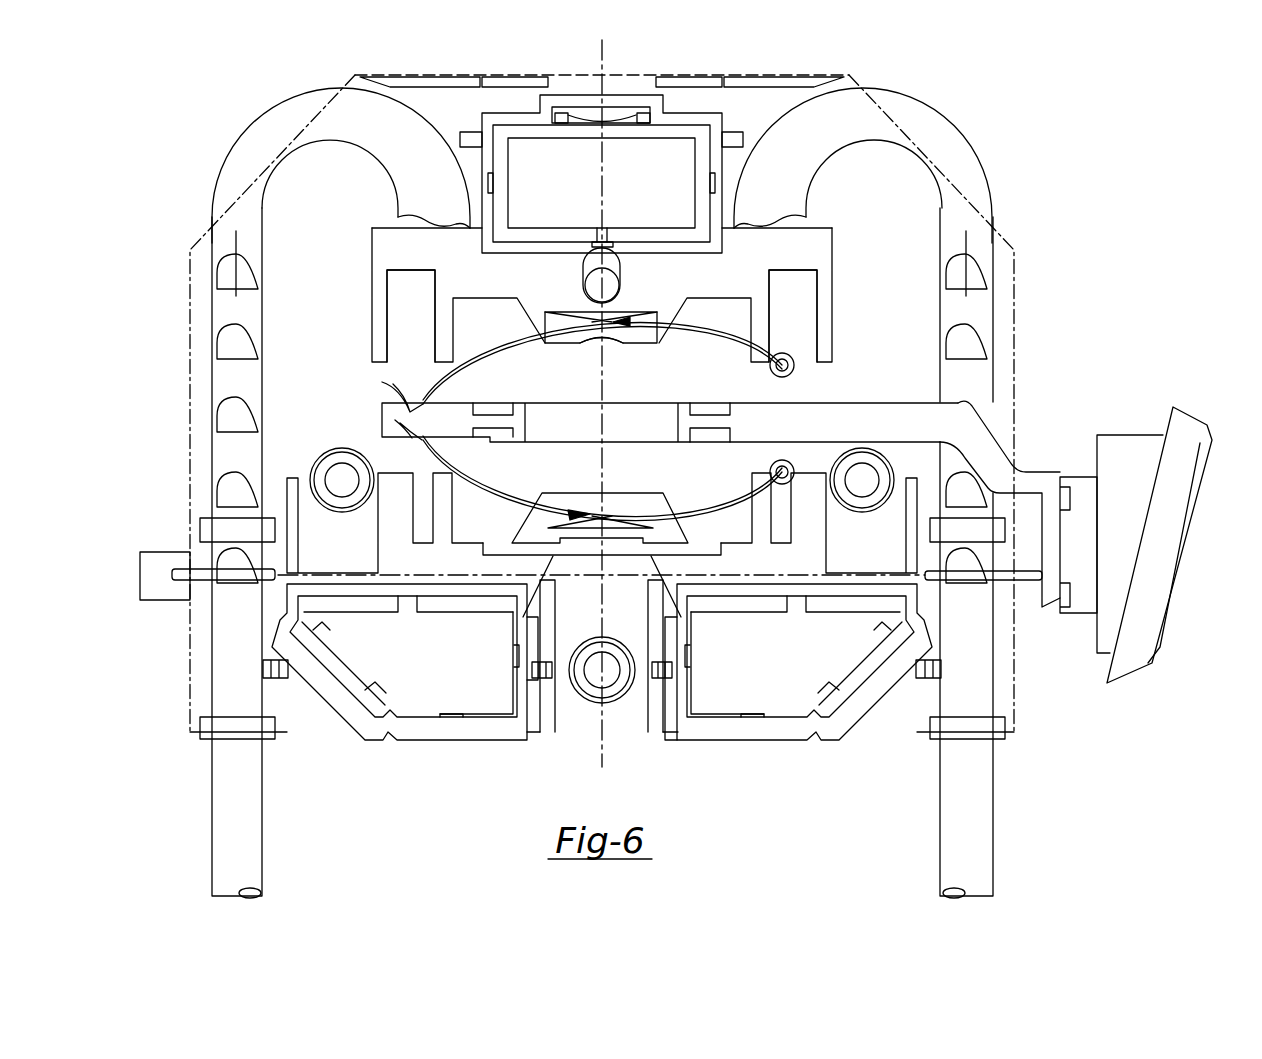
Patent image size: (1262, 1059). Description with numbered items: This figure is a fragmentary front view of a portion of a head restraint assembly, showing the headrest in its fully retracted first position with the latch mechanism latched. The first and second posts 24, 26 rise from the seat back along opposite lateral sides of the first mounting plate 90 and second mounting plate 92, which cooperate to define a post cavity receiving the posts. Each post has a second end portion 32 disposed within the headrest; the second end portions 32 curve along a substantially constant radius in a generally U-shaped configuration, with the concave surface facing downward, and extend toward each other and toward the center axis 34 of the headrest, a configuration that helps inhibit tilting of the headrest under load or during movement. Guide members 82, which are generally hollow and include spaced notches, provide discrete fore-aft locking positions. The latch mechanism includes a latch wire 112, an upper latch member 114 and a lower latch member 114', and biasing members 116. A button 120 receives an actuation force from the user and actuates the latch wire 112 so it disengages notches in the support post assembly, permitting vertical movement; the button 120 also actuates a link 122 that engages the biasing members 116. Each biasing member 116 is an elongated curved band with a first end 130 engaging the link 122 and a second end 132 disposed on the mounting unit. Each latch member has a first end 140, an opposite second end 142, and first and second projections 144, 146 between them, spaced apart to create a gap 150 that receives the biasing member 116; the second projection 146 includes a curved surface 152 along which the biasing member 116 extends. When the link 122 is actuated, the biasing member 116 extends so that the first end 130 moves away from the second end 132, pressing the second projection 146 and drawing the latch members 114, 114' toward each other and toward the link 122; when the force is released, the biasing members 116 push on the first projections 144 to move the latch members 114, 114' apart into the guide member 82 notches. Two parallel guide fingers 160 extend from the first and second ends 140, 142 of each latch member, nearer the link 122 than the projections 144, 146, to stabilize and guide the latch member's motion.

The first post 24 is at (252, 123).
The second post 26 is at (928, 108).
The second end portion 32 is at (590, 144).
The center axis 34 is at (598, 747).
The guide member 82 is at (667, 135).
The first mounting plate 90 is at (197, 334).
The second mounting plate 92 is at (447, 77).
The latch wire 112 is at (236, 571).
The upper latch member 114 is at (602, 180).
The lower latch member 114' is at (601, 556).
The biasing member 116 is at (487, 580).
The button 120 is at (1185, 492).
The link 122 is at (997, 440).
The first end 130 is at (384, 385).
The second end 132 is at (778, 462).
The first end 140 is at (385, 220).
The second end 142 is at (822, 197).
The first projection 144 is at (613, 313).
The second projection 146 is at (623, 345).
The gap 150 is at (650, 322).
The curved surface 152 is at (560, 342).
The guide finger 160 is at (392, 338).